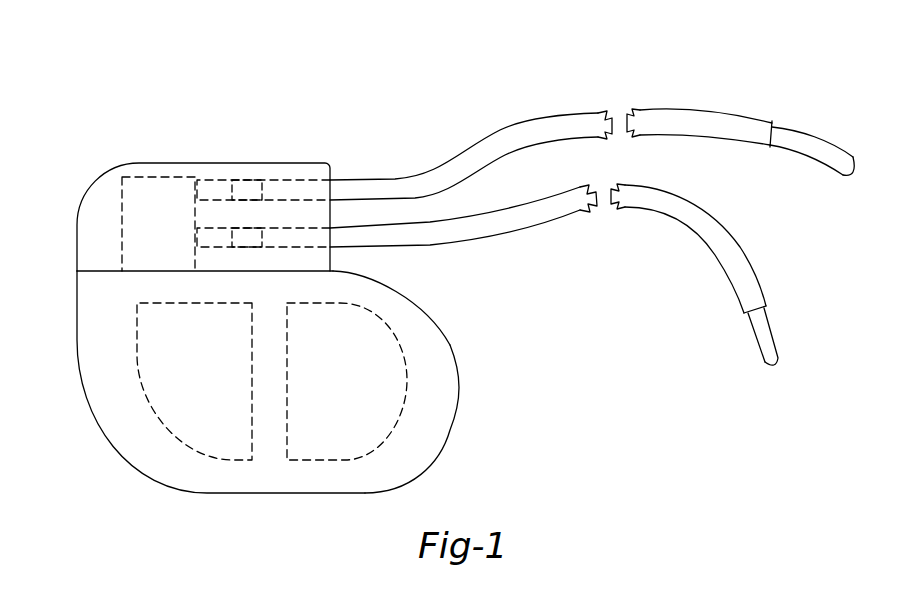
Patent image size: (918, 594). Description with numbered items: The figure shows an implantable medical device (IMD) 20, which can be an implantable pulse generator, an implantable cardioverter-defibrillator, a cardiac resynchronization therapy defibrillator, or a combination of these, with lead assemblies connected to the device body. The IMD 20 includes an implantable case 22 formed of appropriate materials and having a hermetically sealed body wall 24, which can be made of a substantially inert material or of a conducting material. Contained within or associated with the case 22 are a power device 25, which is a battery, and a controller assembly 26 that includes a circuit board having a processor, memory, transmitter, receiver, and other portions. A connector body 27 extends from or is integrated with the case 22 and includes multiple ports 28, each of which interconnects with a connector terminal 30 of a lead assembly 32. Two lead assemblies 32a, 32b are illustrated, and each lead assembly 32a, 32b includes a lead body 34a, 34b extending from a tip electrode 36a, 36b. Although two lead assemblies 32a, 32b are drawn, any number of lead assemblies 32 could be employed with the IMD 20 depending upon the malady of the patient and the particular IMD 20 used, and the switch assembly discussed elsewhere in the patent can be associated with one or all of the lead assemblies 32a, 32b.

The implantable medical device 20 is at (271, 323).
The implantable case 22 is at (445, 337).
The hermetically sealed body wall 24 is at (450, 387).
The power device 25 is at (220, 437).
The controller assembly 26 is at (330, 437).
The connector body 27 is at (87, 233).
The ports 28 is at (300, 180).
The connector terminal 30 is at (248, 181).
The lead assembly 32 is at (476, 149).
The first lead assembly 32a is at (562, 122).
The second lead assembly 32b is at (548, 207).
The first lead body 34a is at (697, 125).
The second lead body 34b is at (672, 198).
The first tip electrode 36a is at (838, 153).
The second tip electrode 36b is at (768, 368).